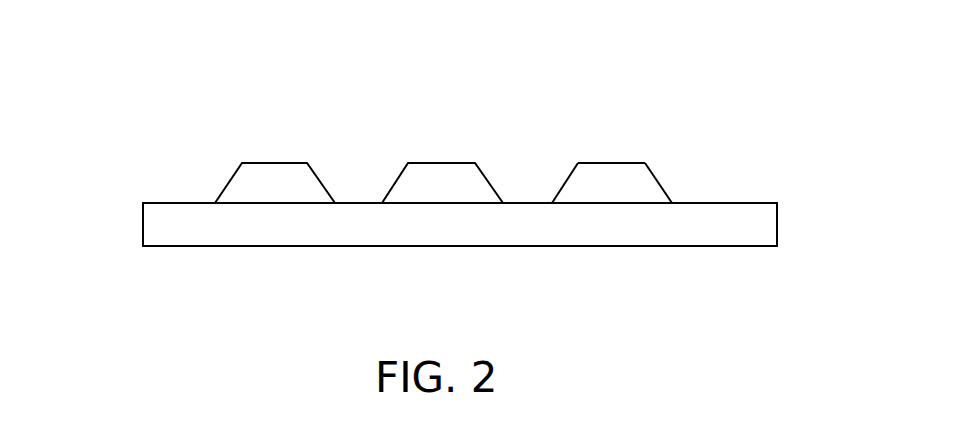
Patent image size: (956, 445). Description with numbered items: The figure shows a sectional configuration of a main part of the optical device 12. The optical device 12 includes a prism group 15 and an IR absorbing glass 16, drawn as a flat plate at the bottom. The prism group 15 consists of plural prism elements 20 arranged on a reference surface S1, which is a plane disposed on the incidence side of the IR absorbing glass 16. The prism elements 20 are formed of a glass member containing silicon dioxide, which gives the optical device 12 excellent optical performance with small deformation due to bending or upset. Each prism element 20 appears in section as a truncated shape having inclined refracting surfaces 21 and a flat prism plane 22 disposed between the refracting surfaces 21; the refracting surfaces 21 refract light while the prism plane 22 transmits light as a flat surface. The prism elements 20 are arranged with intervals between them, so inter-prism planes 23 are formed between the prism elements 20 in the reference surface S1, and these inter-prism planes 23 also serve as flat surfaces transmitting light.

The optical device 12 is at (240, 77).
The prism group 15 is at (193, 178).
The IR absorbing glass 16 is at (152, 222).
The prism element 20 is at (408, 182).
The refracting surface 21 is at (573, 172).
The prism plane 22 is at (617, 162).
The inter-prism plane 23 is at (524, 202).
The reference surface S1 is at (753, 202).